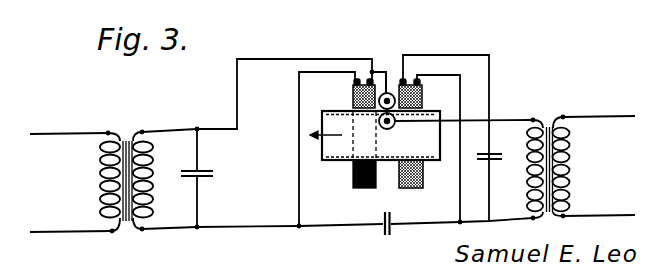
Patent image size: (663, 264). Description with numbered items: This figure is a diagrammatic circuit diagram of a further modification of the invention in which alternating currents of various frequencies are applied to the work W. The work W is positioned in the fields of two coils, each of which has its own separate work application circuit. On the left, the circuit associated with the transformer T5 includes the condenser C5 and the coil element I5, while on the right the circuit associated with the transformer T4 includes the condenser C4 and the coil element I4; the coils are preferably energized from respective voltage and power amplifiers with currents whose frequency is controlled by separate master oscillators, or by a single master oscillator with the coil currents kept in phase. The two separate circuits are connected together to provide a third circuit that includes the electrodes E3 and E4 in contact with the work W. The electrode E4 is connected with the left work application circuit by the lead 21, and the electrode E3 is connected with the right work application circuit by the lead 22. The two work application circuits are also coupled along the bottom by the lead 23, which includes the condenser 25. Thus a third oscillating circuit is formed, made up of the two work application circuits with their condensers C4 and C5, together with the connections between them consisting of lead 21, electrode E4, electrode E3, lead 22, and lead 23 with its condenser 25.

The transformer T5 is at (128, 130).
The condenser C5 is at (202, 170).
The coil I5 is at (330, 103).
The coil I4 is at (450, 103).
The lead 21 is at (383, 70).
The electrode E4 is at (389, 92).
The electrode E3 is at (379, 128).
The lead 22 is at (481, 119).
The work piece W is at (337, 162).
The lead 23 is at (428, 223).
The condenser 25 is at (386, 237).
The condenser C4 is at (493, 162).
The transformer T4 is at (550, 117).